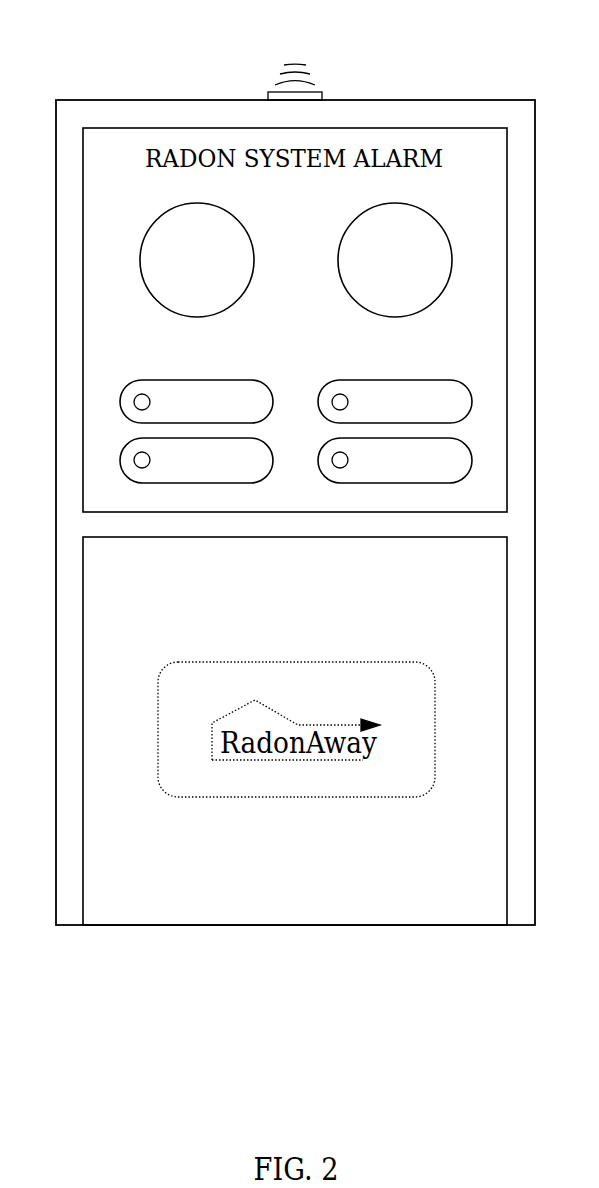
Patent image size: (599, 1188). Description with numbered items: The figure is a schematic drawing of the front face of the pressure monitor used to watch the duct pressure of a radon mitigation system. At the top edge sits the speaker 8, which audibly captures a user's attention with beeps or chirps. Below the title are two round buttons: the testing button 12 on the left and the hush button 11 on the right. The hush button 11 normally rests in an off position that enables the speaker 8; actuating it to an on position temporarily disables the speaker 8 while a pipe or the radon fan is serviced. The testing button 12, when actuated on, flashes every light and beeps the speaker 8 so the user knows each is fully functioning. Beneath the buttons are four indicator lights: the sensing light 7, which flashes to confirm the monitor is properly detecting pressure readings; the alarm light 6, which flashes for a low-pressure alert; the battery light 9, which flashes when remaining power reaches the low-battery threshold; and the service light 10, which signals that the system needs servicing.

The alarm light 6 is at (132, 456).
The sensing light 7 is at (132, 397).
The speaker 8 is at (321, 92).
The battery light 9 is at (332, 397).
The service light 10 is at (332, 456).
The hush button 11 is at (355, 289).
The testing button 12 is at (235, 230).